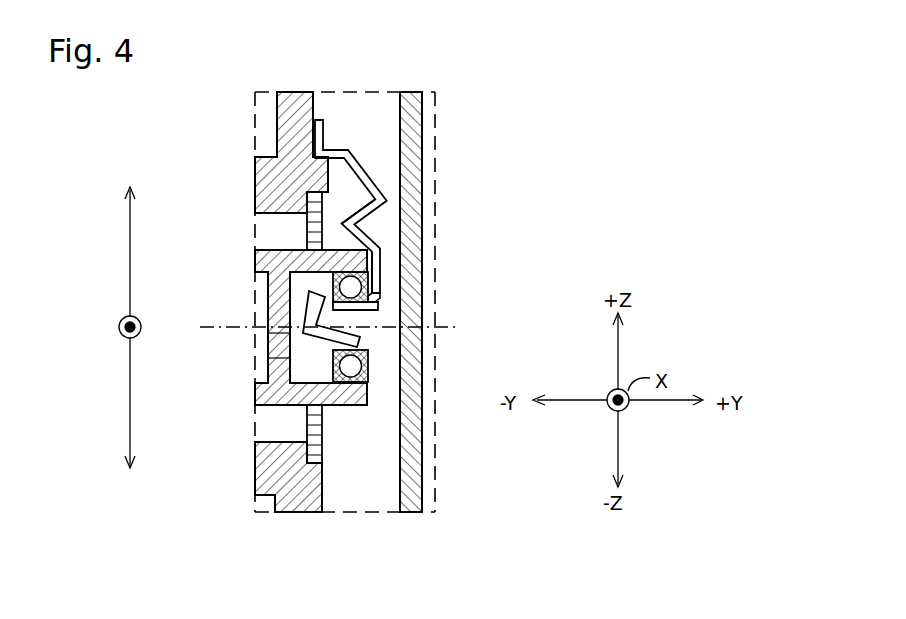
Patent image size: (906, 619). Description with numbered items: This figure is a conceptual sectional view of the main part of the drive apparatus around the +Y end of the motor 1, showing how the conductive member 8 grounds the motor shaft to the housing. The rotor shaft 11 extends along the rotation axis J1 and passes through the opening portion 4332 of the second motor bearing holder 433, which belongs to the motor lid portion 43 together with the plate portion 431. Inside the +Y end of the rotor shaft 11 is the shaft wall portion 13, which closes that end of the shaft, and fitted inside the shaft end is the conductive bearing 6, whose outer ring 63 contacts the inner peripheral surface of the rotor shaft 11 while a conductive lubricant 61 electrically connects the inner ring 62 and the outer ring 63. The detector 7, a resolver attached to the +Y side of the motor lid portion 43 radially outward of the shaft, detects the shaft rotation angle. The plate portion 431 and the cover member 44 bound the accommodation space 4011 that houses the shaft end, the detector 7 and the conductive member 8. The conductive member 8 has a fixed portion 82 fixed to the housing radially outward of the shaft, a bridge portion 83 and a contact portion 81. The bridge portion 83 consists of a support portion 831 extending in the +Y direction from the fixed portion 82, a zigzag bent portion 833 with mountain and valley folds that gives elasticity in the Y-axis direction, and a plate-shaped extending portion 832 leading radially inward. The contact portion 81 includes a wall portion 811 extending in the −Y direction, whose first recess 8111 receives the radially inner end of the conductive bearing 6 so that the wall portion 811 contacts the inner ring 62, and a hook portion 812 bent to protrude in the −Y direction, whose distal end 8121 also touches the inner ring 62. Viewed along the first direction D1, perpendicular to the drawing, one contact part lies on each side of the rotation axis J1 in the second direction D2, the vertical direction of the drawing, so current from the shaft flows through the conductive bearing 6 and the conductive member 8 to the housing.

The motor 1 is at (348, 410).
The rotor shaft 11 is at (258, 262).
The shaft wall portion 13 is at (276, 298).
The conductive bearing 6 is at (233, 367).
The lubricant 61 is at (278, 346).
The inner ring 62 is at (276, 367).
The outer ring 63 is at (286, 392).
The detector 7 is at (306, 425).
The conductive member 8 is at (447, 251).
The contact portion 81 is at (430, 327).
The wall portion 811 is at (384, 310).
The first recess 8111 is at (352, 309).
The hook portion 812 is at (325, 320).
The distal end 8121 is at (370, 357).
The fixed portion 82 is at (325, 134).
The bridge portion 83 is at (440, 219).
The support portion 831 is at (342, 146).
The extending portion 832 is at (383, 268).
The bent portion 833 is at (386, 221).
The motor lid portion 43 is at (255, 302).
The plate portion 431 is at (288, 104).
The second motor bearing holder 433 is at (291, 447).
The opening portion 4332 is at (296, 459).
The accommodation space 4011 is at (384, 499).
The cover member 44 is at (423, 463).
The rotation axis J1 is at (215, 327).
The first direction D1 is at (118, 326).
The second direction D2 is at (130, 393).